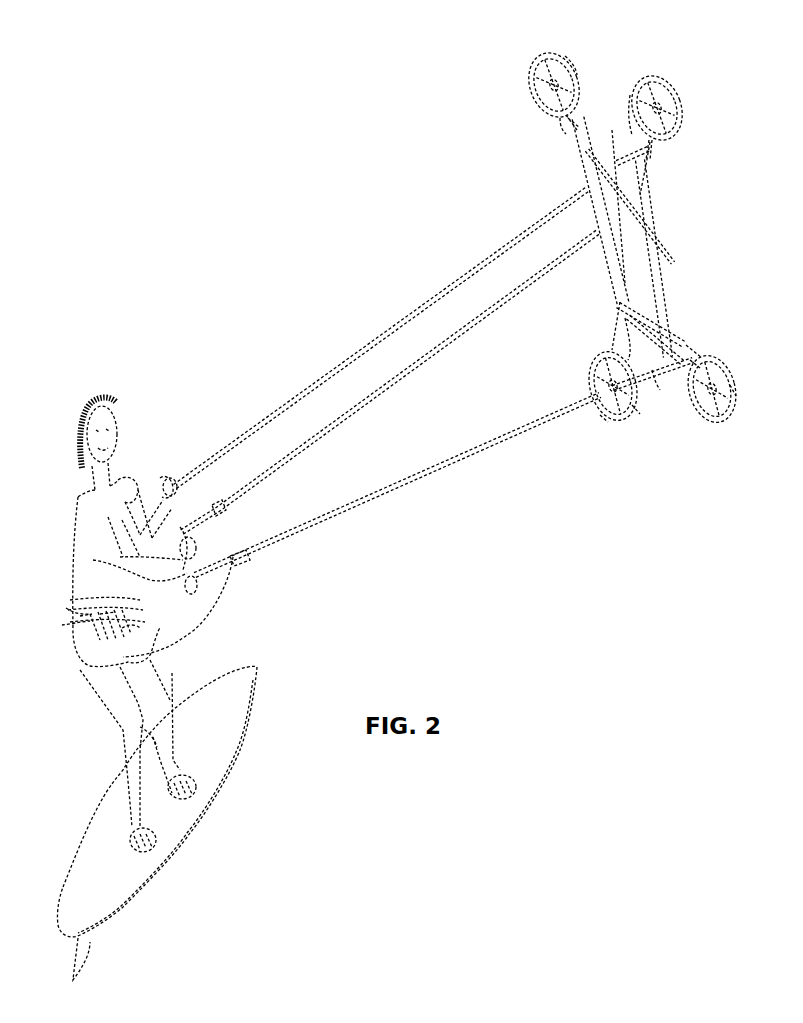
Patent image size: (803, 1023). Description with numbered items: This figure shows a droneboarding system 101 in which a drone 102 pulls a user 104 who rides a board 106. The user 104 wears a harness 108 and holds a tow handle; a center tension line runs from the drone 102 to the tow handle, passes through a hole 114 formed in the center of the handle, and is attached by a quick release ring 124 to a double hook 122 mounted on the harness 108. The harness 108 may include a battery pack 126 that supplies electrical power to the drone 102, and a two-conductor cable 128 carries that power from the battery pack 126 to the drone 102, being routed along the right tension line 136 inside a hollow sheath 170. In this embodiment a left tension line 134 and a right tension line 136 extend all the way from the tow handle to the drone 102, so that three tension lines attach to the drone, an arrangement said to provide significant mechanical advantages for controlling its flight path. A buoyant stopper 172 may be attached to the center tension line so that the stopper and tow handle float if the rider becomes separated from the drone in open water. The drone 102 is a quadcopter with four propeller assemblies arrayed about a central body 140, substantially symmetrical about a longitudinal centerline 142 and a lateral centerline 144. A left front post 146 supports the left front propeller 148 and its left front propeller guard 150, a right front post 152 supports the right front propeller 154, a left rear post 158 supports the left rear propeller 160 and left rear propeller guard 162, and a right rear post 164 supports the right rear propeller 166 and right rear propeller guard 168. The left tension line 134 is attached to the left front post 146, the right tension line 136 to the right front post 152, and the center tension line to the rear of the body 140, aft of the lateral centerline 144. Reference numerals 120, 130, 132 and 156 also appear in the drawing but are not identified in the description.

The droneboarding system 101 is at (218, 195).
The drone 102 is at (677, 505).
The user 104 is at (52, 458).
The board 106 is at (228, 783).
The harness 108 is at (70, 612).
The hole 114 is at (193, 544).
The harness strap 120 is at (84, 614).
The double hook 122 is at (106, 612).
The quick release ring 124 is at (130, 627).
The battery pack 126 is at (68, 628).
The two-conductor cable 128 is at (240, 566).
The handle grip 130 is at (168, 476).
The middle tow bar 132 is at (374, 402).
The left tension line 134 is at (310, 396).
The right tension line 136 is at (230, 555).
The central body 140 is at (608, 262).
The longitudinal centerline 142 is at (660, 244).
The lateral centerline 144 is at (614, 140).
The left front post 146 is at (648, 160).
The left front propeller 148 is at (662, 80).
The left front propeller guard 150 is at (642, 74).
The right front post 152 is at (650, 212).
The right front propeller 154 is at (720, 360).
The rear right wheel mount 156 is at (736, 396).
The left rear post 158 is at (564, 132).
The left rear propeller 160 is at (538, 60).
The left rear propeller guard 162 is at (566, 56).
The right rear post 164 is at (600, 354).
The right rear propeller 166 is at (612, 418).
The right rear propeller guard 168 is at (638, 414).
The hollow sheath 170 is at (460, 488).
The buoyant stopper 172 is at (219, 504).